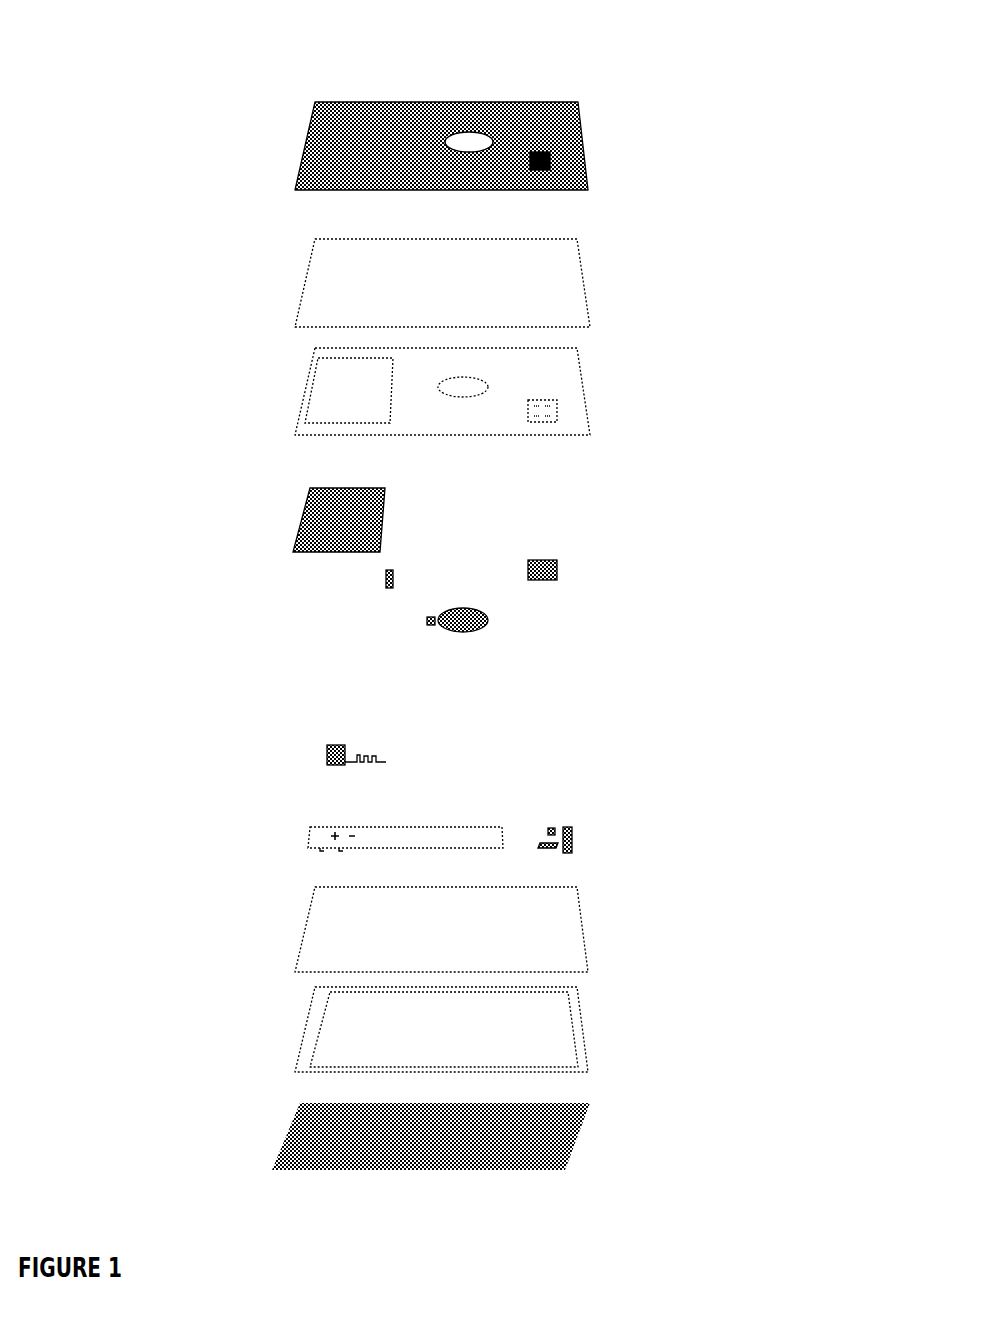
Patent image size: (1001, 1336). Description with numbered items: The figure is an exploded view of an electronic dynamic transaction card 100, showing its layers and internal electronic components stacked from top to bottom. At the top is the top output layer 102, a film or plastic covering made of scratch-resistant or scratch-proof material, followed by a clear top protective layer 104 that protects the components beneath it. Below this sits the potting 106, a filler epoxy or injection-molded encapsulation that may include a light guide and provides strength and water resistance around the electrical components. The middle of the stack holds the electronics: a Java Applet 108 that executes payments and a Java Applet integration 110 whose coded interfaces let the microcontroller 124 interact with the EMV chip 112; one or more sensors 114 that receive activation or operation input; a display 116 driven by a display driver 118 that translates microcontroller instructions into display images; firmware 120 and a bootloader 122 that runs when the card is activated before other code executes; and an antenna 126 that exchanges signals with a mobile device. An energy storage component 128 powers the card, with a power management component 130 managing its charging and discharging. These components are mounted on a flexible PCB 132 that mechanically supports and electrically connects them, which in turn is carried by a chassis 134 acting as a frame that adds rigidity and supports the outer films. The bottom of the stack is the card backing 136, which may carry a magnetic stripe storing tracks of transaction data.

The dynamic transaction card 100 is at (168, 65).
The top output layer 102 is at (588, 137).
The top protective layer 104 is at (650, 281).
The potting 106 is at (612, 383).
The Java Applet 108 is at (593, 475).
The Java Applet integration 110 is at (593, 525).
The EMV chip 112 is at (558, 566).
The sensors 114 is at (493, 618).
The display 116 is at (302, 504).
The display driver 118 is at (383, 578).
The firmware 120 is at (297, 640).
The bootloader 122 is at (305, 700).
The microcontroller 124 is at (325, 754).
The antenna 126 is at (367, 768).
The energy storage component 128 is at (508, 835).
The power management component 130 is at (574, 833).
The flexible PCB 132 is at (293, 952).
The chassis 134 is at (593, 1023).
The card backing 136 is at (587, 1113).